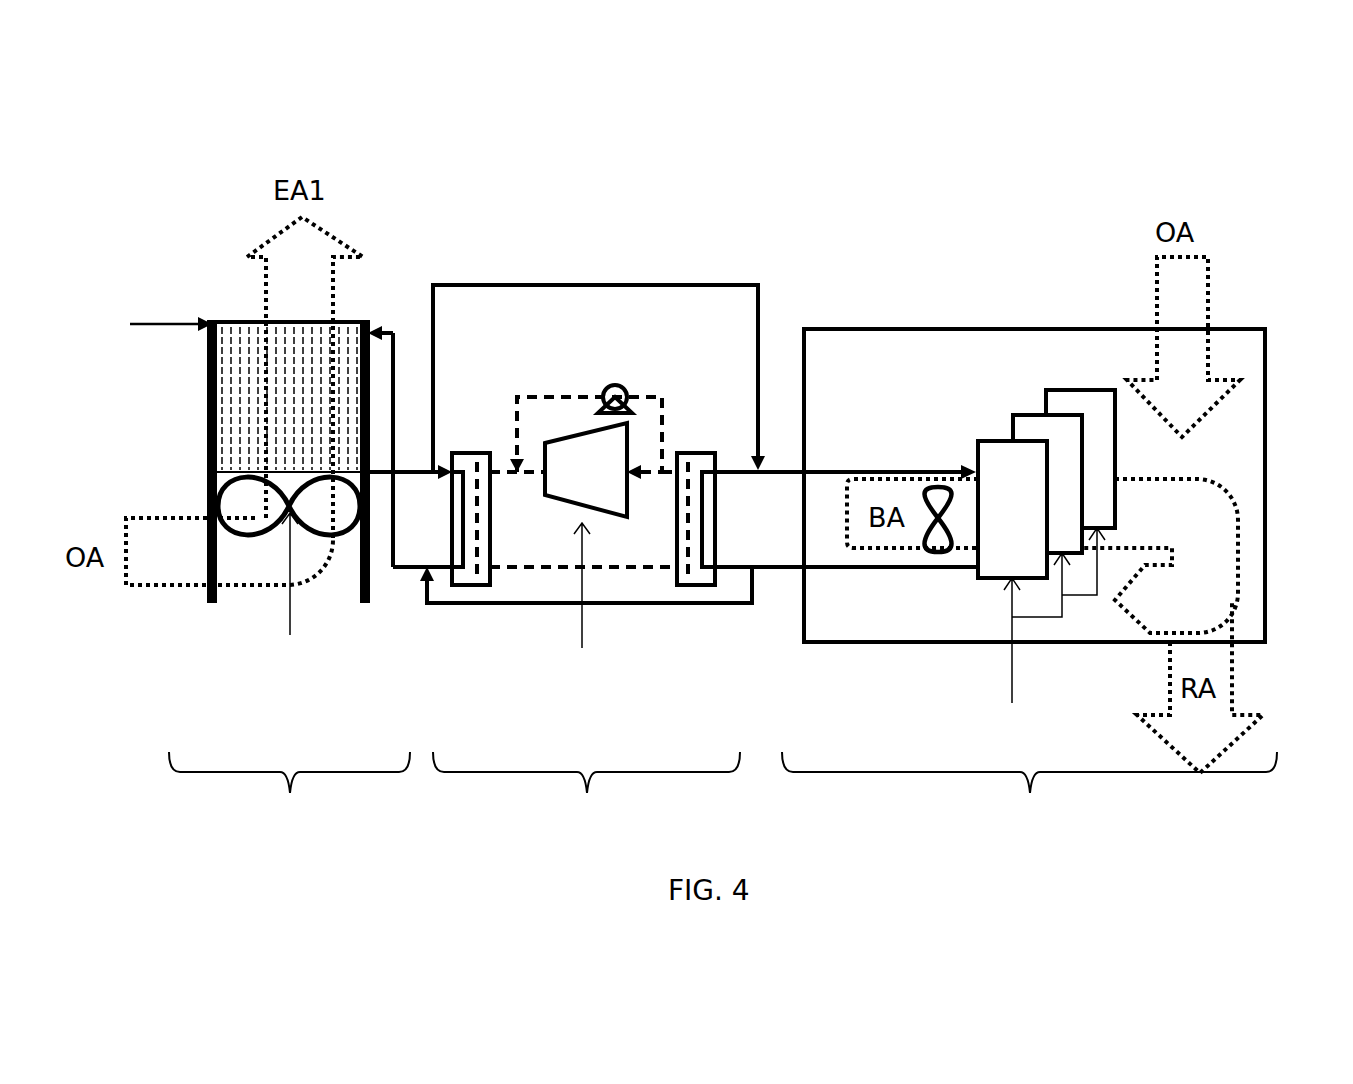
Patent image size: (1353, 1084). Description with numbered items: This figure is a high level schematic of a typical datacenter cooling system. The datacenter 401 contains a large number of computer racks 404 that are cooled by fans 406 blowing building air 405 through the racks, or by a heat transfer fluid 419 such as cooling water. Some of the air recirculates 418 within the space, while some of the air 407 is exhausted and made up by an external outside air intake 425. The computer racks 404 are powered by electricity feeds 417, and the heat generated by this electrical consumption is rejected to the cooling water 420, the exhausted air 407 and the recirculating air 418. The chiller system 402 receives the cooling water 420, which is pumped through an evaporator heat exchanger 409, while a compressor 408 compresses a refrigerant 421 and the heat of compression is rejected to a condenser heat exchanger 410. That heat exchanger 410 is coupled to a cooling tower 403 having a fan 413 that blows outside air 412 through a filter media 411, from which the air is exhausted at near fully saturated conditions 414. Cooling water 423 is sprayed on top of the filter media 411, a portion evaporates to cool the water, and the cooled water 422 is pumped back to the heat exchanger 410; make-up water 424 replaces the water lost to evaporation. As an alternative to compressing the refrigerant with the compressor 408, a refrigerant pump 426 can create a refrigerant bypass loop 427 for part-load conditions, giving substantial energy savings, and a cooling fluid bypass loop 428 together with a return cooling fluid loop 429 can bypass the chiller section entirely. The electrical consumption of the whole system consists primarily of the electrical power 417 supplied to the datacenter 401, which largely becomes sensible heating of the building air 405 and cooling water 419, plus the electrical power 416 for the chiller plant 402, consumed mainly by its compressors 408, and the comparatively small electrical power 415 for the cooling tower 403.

The datacenter 401 is at (1029, 576).
The chiller system 402 is at (586, 788).
The cooling tower 403 is at (289, 788).
The computer racks 404 is at (1080, 377).
The building air 405 is at (867, 480).
The fans 406 is at (935, 483).
The exhausted air 407 is at (1220, 678).
The compressor 408 is at (597, 438).
The evaporator heat exchanger 409 is at (695, 453).
The condenser heat exchanger 410 is at (470, 453).
The filter media 411 is at (240, 410).
The outside air 412 is at (170, 553).
The fan 413 is at (245, 505).
The exhaust air at near fully saturated conditions 414 is at (300, 268).
The electrical power for the cooling tower 415 is at (300, 627).
The electrical power for the chiller plant 416 is at (585, 633).
The electricity feeds 417 is at (1008, 680).
The recirculating air 418 is at (1140, 610).
The heat transfer fluid 419 is at (723, 465).
The cooling water 420 is at (765, 570).
The refrigerant 421 is at (523, 578).
The cooled water 422 is at (415, 463).
The cooling water sprayed on the filter media 423 is at (412, 575).
The make-up water 424 is at (158, 313).
The outside air intake 425 is at (1187, 267).
The refrigerant pump 426 is at (612, 380).
The refrigerant bypass loop 427 is at (642, 388).
The cooling fluid bypass loop 428 is at (612, 280).
The return cooling fluid loop 429 is at (717, 610).